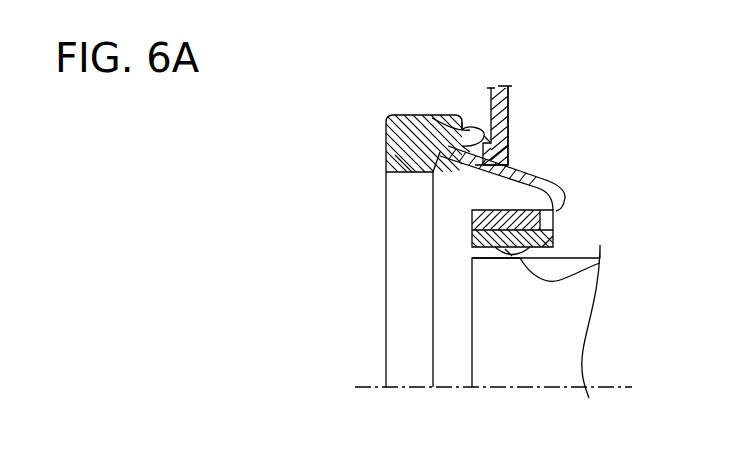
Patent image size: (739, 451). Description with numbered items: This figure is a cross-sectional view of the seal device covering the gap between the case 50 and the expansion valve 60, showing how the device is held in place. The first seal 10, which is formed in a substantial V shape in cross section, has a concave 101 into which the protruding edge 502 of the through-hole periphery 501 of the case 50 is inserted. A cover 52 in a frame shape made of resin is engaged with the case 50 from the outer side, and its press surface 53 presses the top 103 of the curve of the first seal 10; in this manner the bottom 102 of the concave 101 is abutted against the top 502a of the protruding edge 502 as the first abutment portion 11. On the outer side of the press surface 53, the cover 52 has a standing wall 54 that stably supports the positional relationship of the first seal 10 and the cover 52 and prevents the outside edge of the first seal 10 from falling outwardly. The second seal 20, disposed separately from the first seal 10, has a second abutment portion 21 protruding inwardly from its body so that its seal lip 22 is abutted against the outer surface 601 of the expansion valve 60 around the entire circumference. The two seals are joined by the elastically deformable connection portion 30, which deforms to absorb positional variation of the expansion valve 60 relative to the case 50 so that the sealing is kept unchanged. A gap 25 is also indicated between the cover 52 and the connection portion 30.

The first seal 10 is at (410, 124).
The first abutment portion 11 is at (487, 107).
The bottom of the concave 102 is at (466, 149).
The concave 101 is at (468, 112).
The top of a curve 103 is at (392, 183).
The second seal 20 is at (556, 240).
The second abutment portion 21 is at (572, 281).
The seal lip 22 is at (600, 263).
The gap 25 is at (460, 194).
The connection portion 30 is at (512, 172).
The case 50 is at (512, 118).
The through-hole periphery 501 is at (518, 160).
The protruding edge 502 is at (515, 138).
The top of the protruding edge 502a is at (503, 176).
The cover 52 is at (387, 142).
The press surface 53 is at (400, 150).
The standing wall 54 is at (438, 117).
The expansion valve 60 is at (545, 333).
The outer surface 601 is at (560, 257).